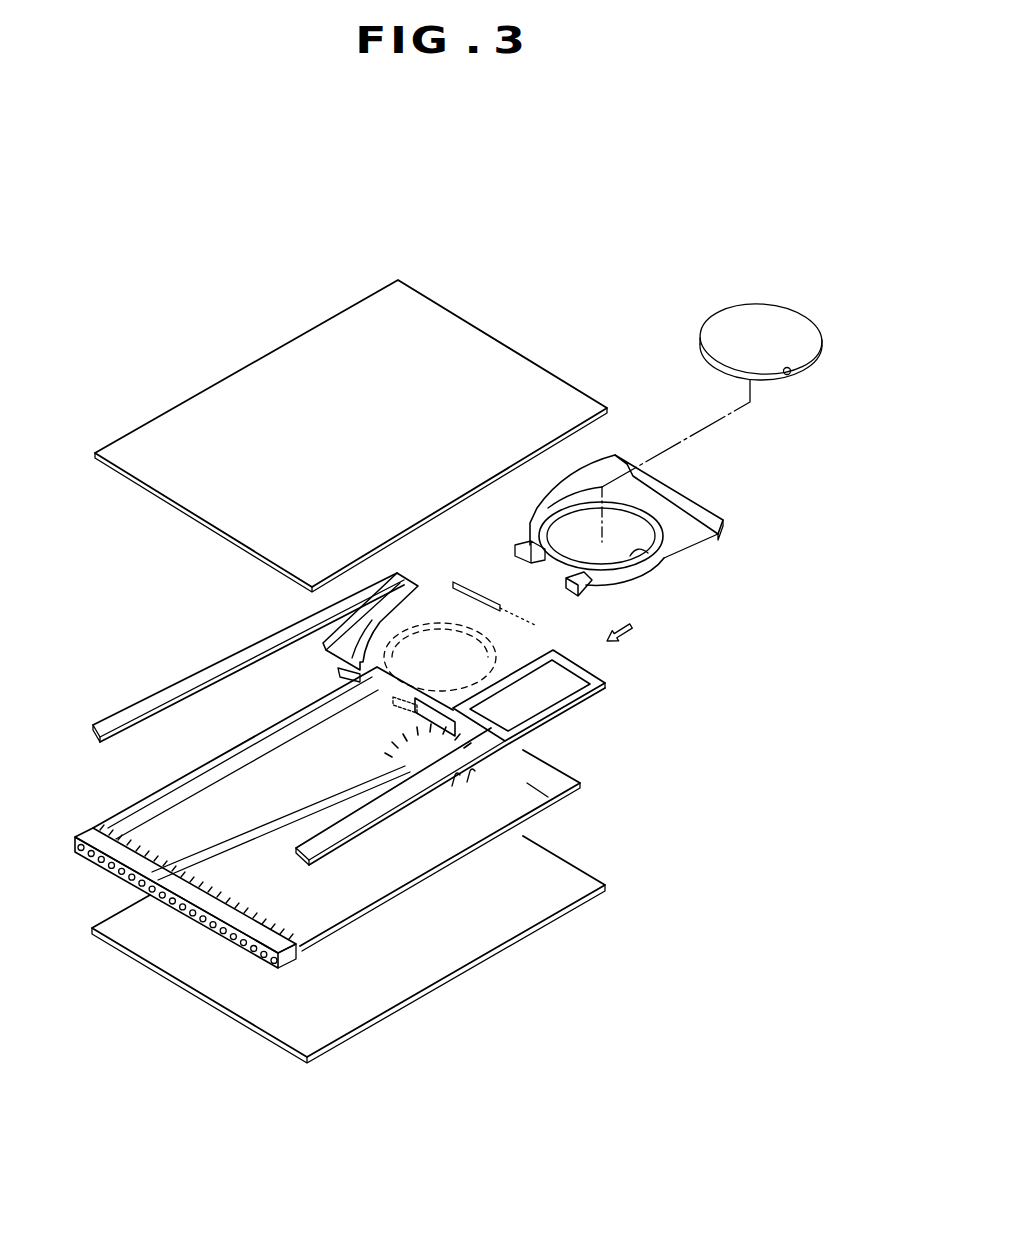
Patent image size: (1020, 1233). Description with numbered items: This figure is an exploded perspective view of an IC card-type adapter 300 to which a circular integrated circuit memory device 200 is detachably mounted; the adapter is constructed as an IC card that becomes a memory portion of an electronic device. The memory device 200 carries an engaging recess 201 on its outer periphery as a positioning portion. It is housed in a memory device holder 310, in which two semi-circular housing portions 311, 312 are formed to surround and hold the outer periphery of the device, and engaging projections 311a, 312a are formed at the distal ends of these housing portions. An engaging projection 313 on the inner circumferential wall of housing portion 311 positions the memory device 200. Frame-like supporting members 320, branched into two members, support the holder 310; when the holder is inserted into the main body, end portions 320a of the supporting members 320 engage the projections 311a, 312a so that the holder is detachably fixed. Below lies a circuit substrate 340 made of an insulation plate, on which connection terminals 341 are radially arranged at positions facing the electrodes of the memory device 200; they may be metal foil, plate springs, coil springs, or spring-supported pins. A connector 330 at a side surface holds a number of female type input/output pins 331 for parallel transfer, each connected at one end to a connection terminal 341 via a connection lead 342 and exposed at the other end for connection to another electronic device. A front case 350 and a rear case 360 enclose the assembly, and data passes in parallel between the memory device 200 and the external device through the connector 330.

The integrated circuit memory device 200 is at (782, 302).
The engaging recess 201 is at (788, 378).
The IC card-type adapter 300 is at (536, 332).
The memory device holder 310 is at (692, 533).
The housing portion 311 is at (632, 584).
The engaging projection 311a is at (578, 604).
The housing portion 312 is at (528, 522).
The engaging projection 312a is at (517, 553).
The engaging projection 313 is at (648, 556).
The supporting member 320 is at (200, 665).
The end portion 320a is at (330, 655).
The connector 330 is at (132, 862).
The female type input/output pin 331 is at (132, 866).
The circuit substrate 340 is at (567, 787).
The connection terminal 341 is at (471, 780).
The connection lead 342 is at (183, 823).
The front case 350 is at (555, 400).
The rear case 360 is at (557, 897).